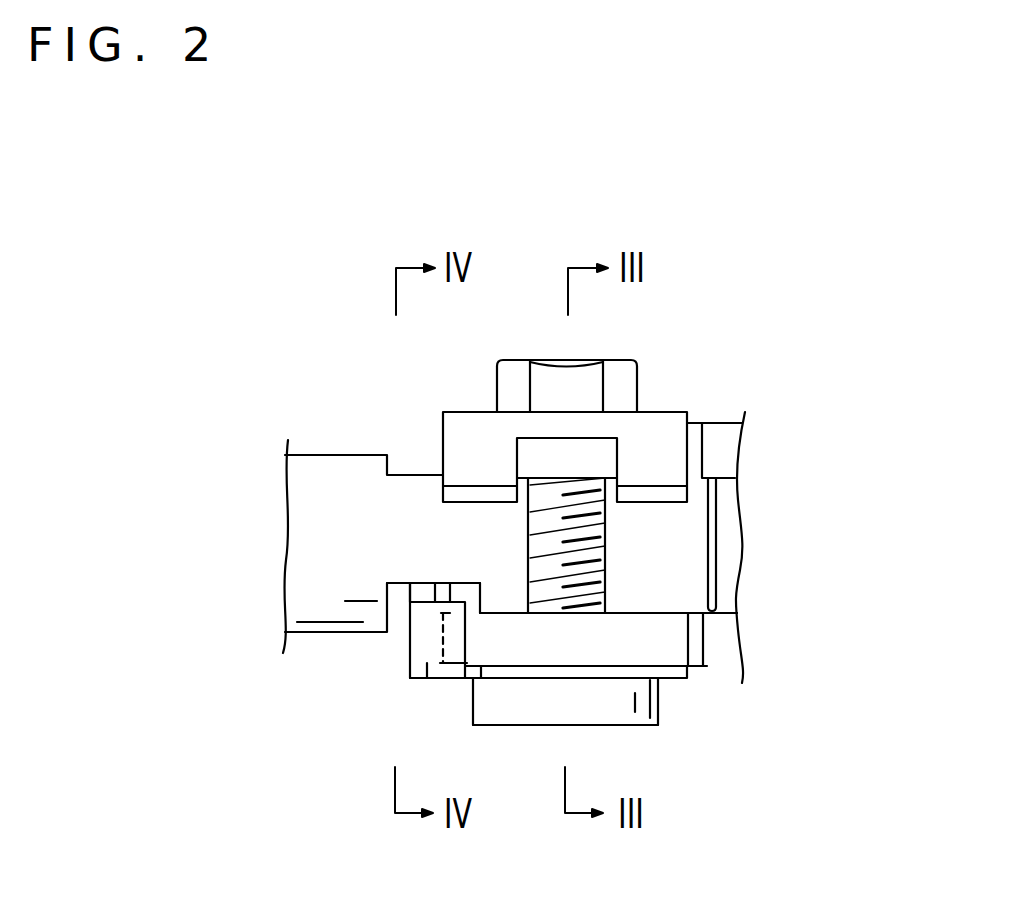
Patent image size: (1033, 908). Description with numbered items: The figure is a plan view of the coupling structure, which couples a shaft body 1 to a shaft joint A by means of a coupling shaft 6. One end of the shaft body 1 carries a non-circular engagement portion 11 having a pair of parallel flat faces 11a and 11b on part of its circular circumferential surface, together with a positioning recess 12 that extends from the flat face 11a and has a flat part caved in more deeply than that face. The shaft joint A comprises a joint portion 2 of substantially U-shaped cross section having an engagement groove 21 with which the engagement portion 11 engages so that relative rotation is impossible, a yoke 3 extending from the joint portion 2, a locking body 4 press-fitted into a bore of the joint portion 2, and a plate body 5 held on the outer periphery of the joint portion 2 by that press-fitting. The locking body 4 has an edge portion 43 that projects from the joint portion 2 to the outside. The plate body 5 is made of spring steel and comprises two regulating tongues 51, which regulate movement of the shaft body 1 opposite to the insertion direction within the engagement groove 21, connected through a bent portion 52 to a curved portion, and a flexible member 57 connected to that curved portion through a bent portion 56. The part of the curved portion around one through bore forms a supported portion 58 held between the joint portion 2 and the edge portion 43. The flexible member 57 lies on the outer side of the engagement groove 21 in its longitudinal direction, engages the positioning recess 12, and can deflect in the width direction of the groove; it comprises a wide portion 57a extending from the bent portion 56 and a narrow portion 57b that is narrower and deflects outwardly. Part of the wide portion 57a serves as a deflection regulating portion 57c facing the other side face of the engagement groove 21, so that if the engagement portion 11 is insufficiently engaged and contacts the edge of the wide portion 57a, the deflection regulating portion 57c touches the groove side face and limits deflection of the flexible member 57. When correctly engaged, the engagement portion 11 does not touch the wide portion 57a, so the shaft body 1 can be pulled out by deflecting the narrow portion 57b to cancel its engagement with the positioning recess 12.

The shaft body 1 is at (325, 455).
The joint portion 2 is at (518, 638).
The yoke 3 is at (718, 662).
The locking body 4 is at (543, 743).
The plate body 5 is at (543, 678).
The coupling shaft 6 is at (620, 368).
The engagement portion 11 is at (692, 565).
The flat face 11a is at (676, 615).
The flat face 11b is at (698, 473).
The positioning recess 12 is at (383, 595).
The engagement groove 21 is at (657, 617).
The edge portion 43 is at (623, 717).
The regulating tongue 51 is at (470, 492).
The bent portion 52 is at (477, 437).
The bent portion 56 is at (427, 665).
The flexible member 57 is at (397, 611).
The wide portion 57a is at (427, 607).
The narrow portion 57b is at (423, 588).
The deflection regulating portion 57c is at (450, 603).
The supported portion 58 is at (653, 692).
The shaft joint A is at (762, 505).